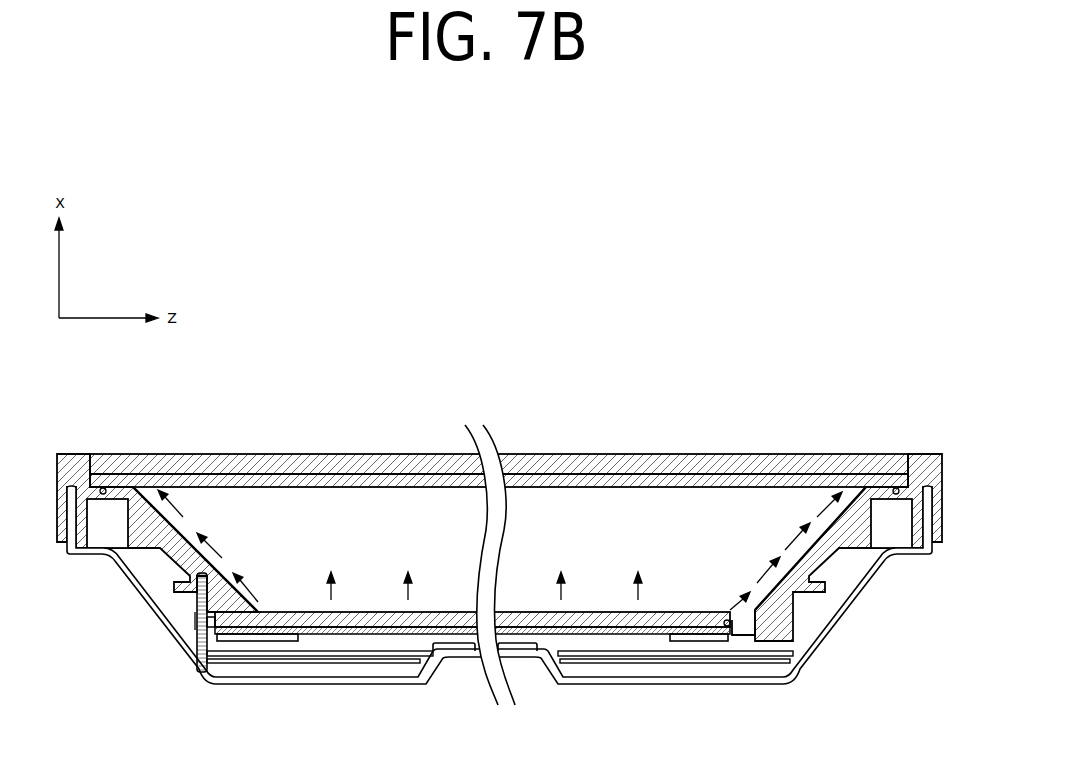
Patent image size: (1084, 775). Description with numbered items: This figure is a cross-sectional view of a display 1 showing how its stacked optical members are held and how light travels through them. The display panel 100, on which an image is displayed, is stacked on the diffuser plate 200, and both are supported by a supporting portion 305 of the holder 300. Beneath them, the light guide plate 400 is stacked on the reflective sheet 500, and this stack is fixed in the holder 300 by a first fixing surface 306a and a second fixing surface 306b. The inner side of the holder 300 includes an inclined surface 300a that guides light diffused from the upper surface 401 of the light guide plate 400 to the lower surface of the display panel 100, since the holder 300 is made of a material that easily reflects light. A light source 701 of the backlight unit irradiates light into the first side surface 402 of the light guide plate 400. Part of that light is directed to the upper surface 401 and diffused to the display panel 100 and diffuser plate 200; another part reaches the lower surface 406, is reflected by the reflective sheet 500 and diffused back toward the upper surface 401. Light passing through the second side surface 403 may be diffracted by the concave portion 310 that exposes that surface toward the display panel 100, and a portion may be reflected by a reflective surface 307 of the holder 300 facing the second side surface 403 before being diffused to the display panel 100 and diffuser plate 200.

The display 1 is at (479, 272).
The display panel 100 is at (218, 466).
The diffuser plate 200 is at (274, 478).
The holder 300 is at (149, 464).
The inclined surface 300a is at (185, 545).
The supporting portion 305 is at (101, 487).
The first fixing surface 306a is at (284, 643).
The second fixing surface 306b is at (206, 617).
The reflective surface 307 is at (804, 678).
The concave portion 310 is at (728, 622).
The light guide plate 400 is at (596, 622).
The upper surface 401 is at (542, 609).
The first side surface 402 is at (213, 660).
The second side surface 403 is at (740, 640).
The lower surface 406 is at (440, 645).
The reflective sheet 500 is at (654, 630).
The light source 701 is at (200, 623).